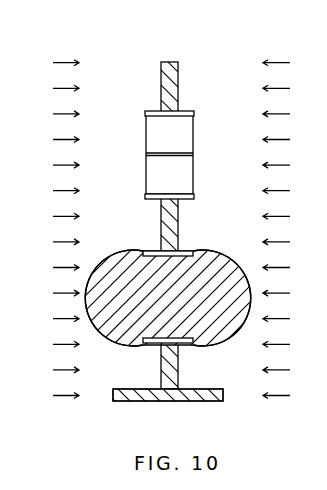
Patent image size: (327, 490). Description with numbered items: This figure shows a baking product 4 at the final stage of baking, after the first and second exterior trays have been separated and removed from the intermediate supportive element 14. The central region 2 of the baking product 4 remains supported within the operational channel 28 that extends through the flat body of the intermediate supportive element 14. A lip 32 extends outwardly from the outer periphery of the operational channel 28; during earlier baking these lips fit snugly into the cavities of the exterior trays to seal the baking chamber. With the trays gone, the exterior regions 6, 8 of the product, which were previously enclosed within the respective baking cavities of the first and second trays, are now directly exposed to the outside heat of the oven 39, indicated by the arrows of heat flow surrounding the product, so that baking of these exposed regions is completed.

The central region 2 is at (176, 293).
The baking product 4 is at (114, 245).
The exterior region 6 is at (102, 318).
The exterior region 8 is at (208, 330).
The intermediate supportive element 14 is at (168, 63).
The operational channel 28 is at (178, 138).
The lip 32 is at (150, 110).
The oven 39 is at (266, 243).